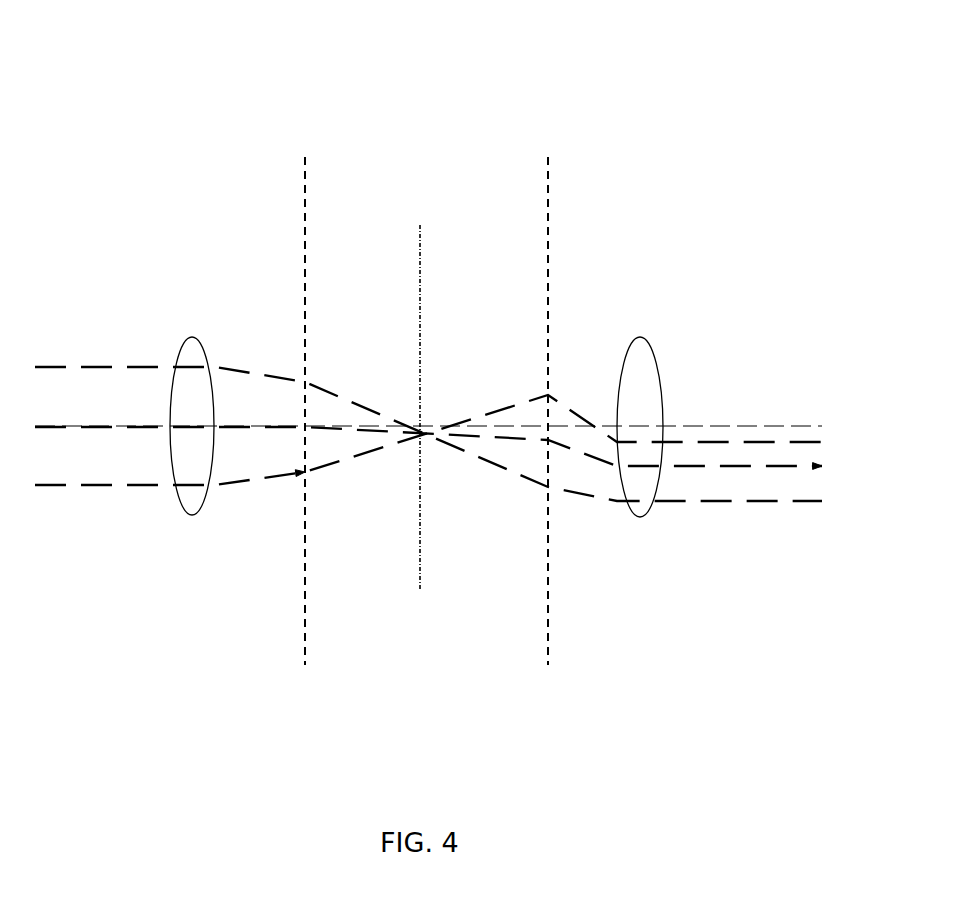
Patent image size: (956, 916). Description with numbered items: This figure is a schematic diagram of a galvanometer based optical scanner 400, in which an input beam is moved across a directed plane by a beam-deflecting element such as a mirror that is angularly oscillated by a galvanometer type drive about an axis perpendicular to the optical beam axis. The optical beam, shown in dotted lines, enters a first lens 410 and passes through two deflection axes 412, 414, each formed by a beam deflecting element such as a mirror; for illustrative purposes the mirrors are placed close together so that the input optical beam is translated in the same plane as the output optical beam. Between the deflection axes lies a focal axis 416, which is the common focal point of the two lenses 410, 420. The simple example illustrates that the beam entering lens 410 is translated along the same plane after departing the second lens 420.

The galvanometer based optical scanner 400 is at (488, 100).
The lens 410 is at (185, 345).
The deflection axis 412 is at (300, 152).
The deflection axis 414 is at (548, 143).
The focal axis 416 is at (420, 218).
The lens 420 is at (652, 353).